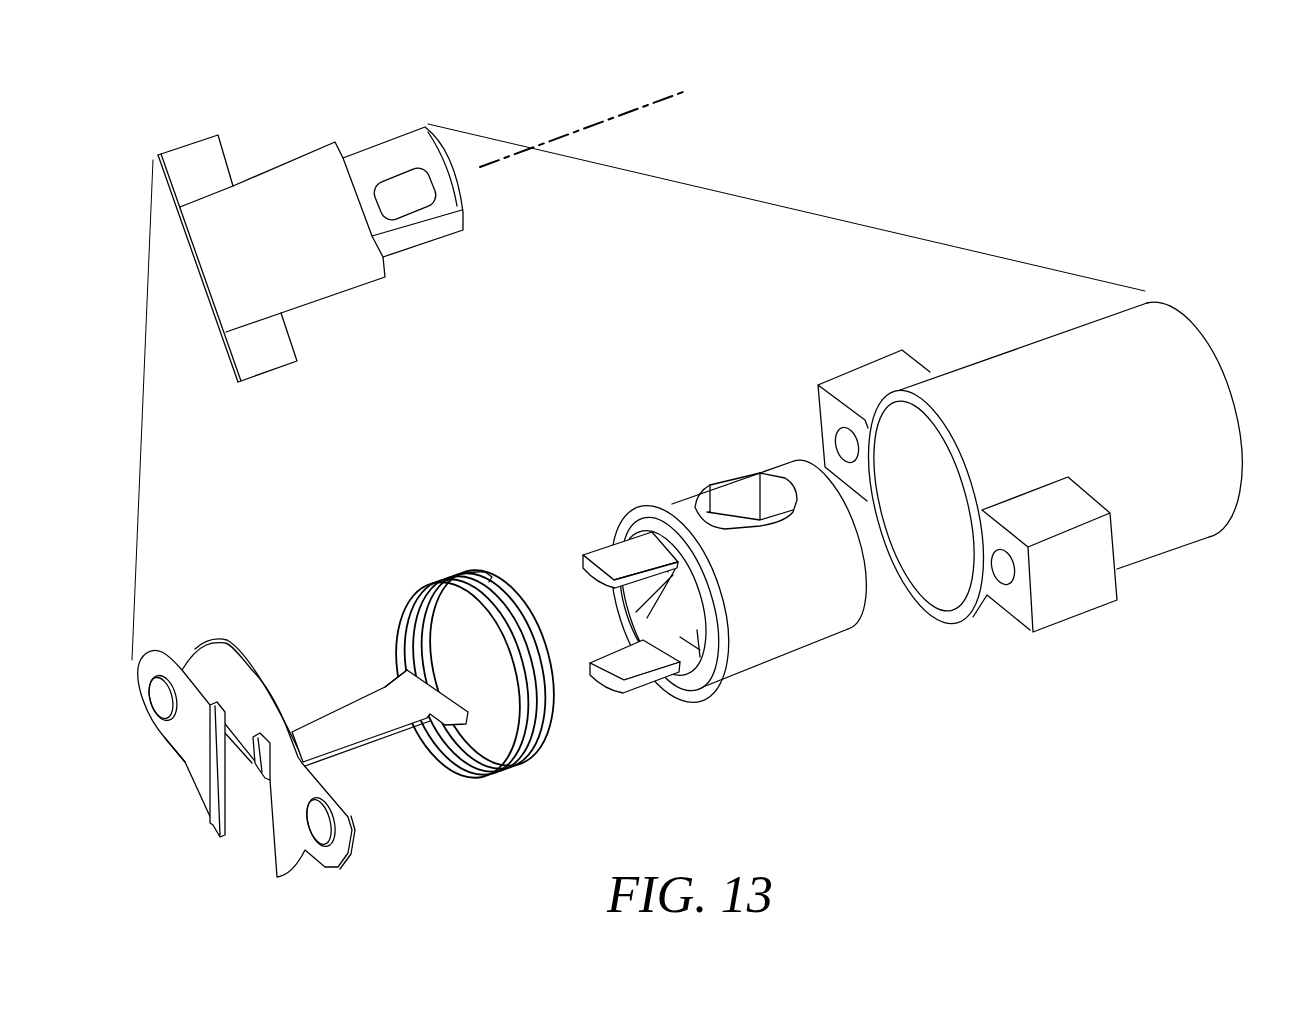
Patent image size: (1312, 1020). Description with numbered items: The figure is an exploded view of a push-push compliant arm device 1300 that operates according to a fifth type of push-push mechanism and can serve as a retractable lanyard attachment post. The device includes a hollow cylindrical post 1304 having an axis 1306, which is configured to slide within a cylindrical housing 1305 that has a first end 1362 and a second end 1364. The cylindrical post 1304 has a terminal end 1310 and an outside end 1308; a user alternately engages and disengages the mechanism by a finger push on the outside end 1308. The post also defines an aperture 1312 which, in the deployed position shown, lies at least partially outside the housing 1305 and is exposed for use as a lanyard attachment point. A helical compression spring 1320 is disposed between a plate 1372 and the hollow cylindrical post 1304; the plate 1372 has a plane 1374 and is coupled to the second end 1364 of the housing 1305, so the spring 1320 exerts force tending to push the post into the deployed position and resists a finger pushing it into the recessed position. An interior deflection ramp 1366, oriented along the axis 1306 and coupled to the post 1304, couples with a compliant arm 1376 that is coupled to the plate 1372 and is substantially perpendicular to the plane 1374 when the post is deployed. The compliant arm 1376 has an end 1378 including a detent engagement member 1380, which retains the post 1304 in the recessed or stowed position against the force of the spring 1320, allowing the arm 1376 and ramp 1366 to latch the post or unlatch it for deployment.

The push-push compliant arm device 1300 is at (556, 106).
The cylindrical post 1304 is at (530, 426).
The cylindrical housing 1305 is at (1177, 547).
The axis 1306 is at (663, 100).
The outside end 1308 is at (866, 606).
The terminal end 1310 is at (670, 701).
The aperture 1312 is at (401, 181).
The helical compression spring 1320 is at (413, 594).
The first end 1362 is at (1030, 469).
The second end 1364 is at (866, 422).
The interior deflection ramp 1366 is at (670, 604).
The plate 1372 is at (278, 736).
The plane 1374 is at (187, 738).
The compliant arm 1376 is at (379, 709).
The end 1378 is at (380, 730).
The detent engagement member 1380 is at (386, 679).